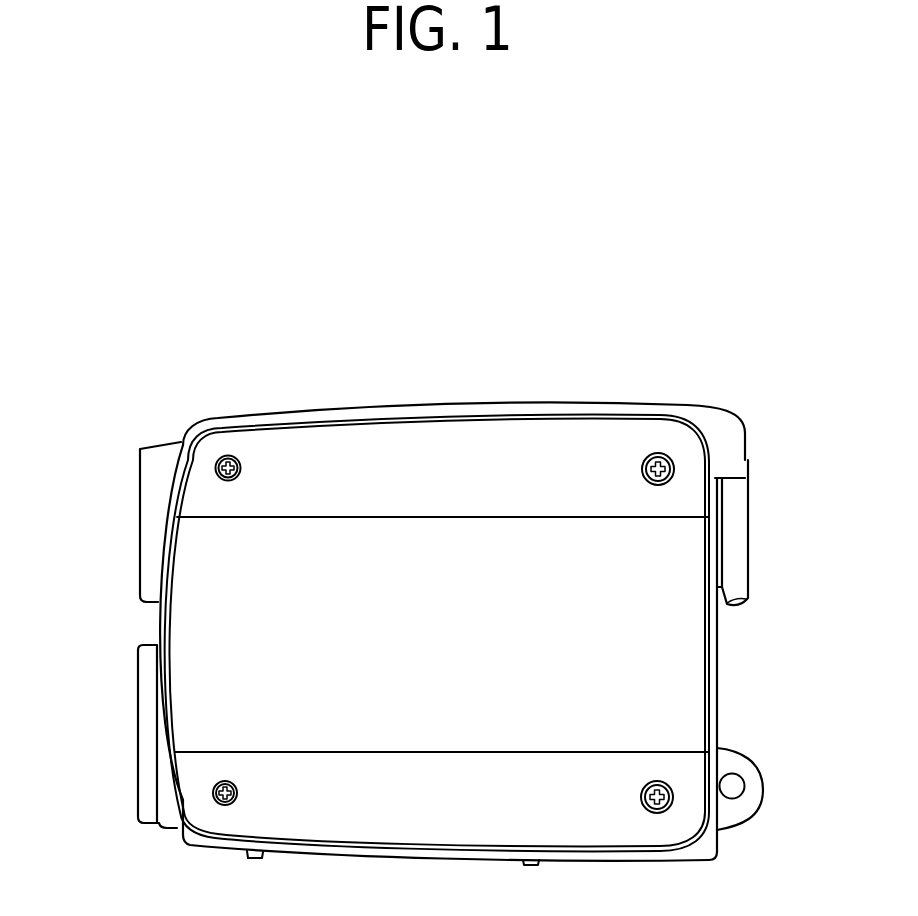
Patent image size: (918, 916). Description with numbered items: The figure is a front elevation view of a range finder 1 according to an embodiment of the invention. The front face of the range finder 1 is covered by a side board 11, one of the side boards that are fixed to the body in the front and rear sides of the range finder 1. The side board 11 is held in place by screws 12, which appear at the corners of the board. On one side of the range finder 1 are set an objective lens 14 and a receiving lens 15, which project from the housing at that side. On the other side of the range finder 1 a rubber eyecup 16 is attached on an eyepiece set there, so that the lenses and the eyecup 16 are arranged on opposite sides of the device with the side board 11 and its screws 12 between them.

The range finder 1 is at (563, 288).
The side board 11 is at (410, 452).
The screw 12 is at (230, 455).
The objective lens 14 is at (139, 558).
The receiving lens 15 is at (139, 790).
The rubber eyecup 16 is at (733, 526).